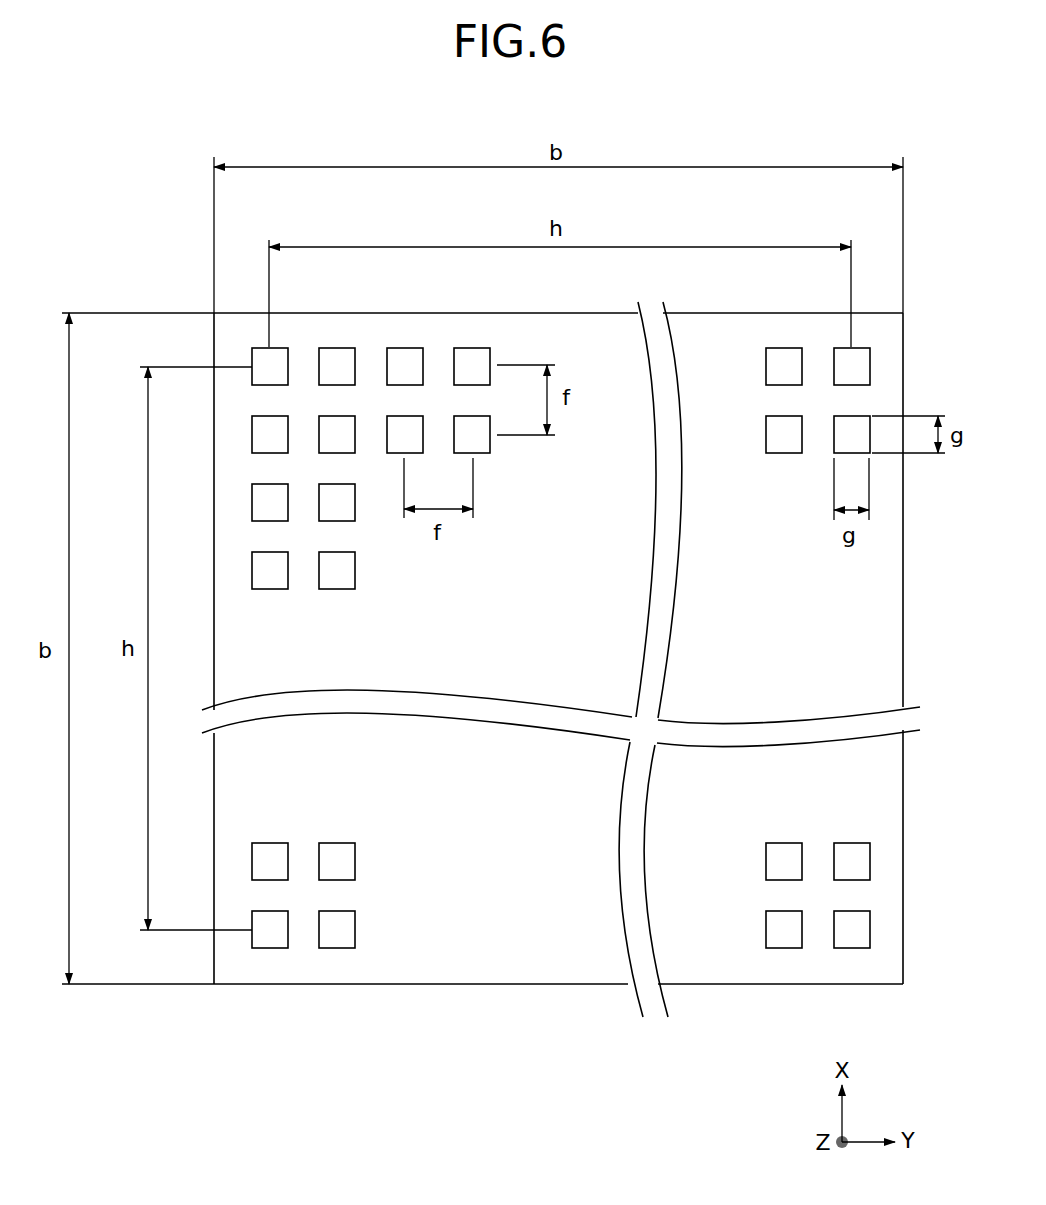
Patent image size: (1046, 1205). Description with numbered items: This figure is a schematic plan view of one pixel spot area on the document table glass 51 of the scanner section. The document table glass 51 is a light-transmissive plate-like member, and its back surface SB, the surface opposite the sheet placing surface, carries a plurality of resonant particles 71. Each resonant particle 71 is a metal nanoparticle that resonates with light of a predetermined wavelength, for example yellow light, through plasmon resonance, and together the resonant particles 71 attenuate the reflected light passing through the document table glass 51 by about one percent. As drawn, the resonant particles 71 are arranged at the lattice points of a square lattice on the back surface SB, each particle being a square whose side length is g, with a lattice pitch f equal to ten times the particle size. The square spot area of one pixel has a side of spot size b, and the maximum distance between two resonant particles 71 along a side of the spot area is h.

The document table glass 51 is at (422, 984).
The resonant particle 71 is at (891, 382).
The back surface SB is at (527, 950).